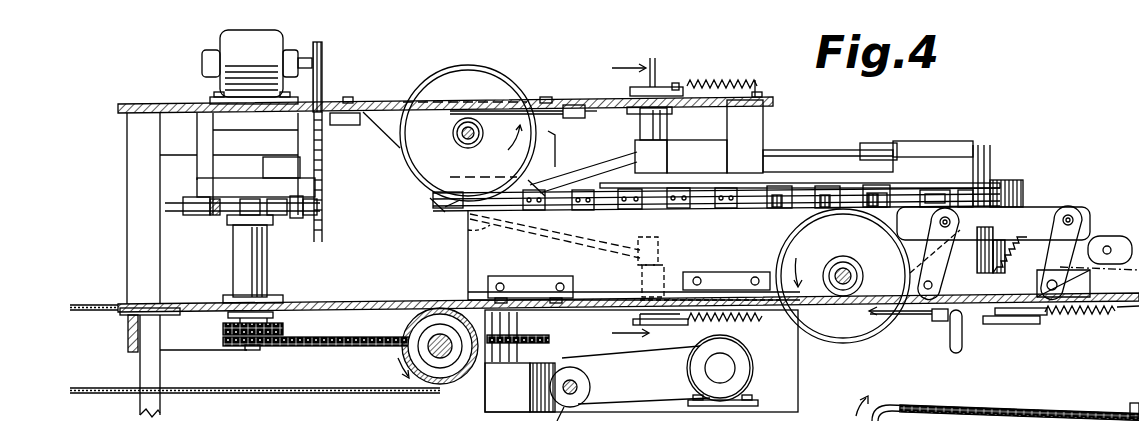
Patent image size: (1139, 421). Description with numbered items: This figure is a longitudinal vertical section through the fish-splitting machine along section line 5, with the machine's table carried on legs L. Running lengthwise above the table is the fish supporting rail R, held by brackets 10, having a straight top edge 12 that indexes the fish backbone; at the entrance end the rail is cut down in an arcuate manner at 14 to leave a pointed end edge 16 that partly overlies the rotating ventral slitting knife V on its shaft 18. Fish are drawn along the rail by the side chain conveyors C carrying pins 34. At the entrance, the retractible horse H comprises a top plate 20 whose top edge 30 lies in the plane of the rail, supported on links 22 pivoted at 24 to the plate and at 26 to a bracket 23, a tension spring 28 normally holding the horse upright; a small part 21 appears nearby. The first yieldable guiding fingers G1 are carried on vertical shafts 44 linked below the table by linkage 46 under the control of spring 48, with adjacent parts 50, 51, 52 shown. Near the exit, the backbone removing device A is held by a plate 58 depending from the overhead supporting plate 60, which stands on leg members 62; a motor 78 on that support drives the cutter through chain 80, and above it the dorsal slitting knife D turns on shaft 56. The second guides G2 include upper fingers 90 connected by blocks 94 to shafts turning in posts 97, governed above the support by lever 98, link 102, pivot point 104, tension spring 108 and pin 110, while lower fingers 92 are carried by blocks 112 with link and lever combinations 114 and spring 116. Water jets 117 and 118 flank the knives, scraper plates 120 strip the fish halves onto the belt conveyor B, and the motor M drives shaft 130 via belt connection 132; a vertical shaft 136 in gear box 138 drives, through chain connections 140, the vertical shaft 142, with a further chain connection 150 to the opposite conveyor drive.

The section line 5 is at (621, 202).
The brackets 10 is at (488, 287).
The top edge 12 is at (696, 226).
The arcuate cut 14 is at (774, 280).
The pointed end edge 16 is at (790, 240).
The shaft 18 is at (862, 242).
The top plate 20 is at (1050, 208).
The bracket 21 is at (905, 200).
The links 22 is at (962, 242).
The bracket 23 is at (973, 313).
The pivot 24 is at (940, 222).
The pivots 26 is at (1046, 286).
The tension spring 28 is at (1002, 244).
The top edge 30 is at (1070, 204).
The pins 34 is at (181, 202).
The vertical shafts 44 is at (1018, 324).
The linkage 46 is at (1052, 318).
The spring 48 is at (1110, 316).
The block 50 is at (930, 192).
The slide block 51 is at (1018, 190).
The block 52 is at (968, 196).
The shaft 56 is at (462, 134).
The plate 58 is at (435, 214).
The overhead supporting plate 60 is at (372, 110).
The leg members 62 is at (138, 150).
The motor 78 is at (238, 42).
The chain 80 is at (322, 86).
The upper fingers 90 is at (584, 165).
The lower guiding fingers 92 is at (474, 228).
The blocks 94 is at (658, 156).
The posts 97 is at (662, 136).
The lever 98 is at (652, 72).
The link 102 is at (636, 88).
The pivot point 104 is at (676, 83).
The tension spring 108 is at (722, 82).
The pin 110 is at (760, 88).
The blocks 112 is at (668, 282).
The link and lever combinations 114 is at (640, 318).
The spring 116 is at (750, 316).
The water jet 117 is at (910, 318).
The water jet 118 is at (515, 100).
The scraper plates 120 is at (282, 172).
The shaft 130 is at (584, 384).
The belt connection 132 is at (668, 394).
The vertical shaft 136 is at (520, 338).
The gear box 138 is at (495, 394).
The chain connections 140 is at (352, 348).
The vertical shaft 142 is at (250, 350).
The driving chain connection 150 is at (284, 334).
The backbone removing device A is at (440, 216).
The conveyor B is at (88, 304).
The side chain conveyors C is at (784, 184).
The dorsal slitting knife D is at (492, 95).
The yieldable guiding fingers G1 is at (988, 166).
The yieldable guides G2 is at (558, 160).
The retractible horse H is at (1078, 206).
The legs L is at (160, 412).
The motor M is at (740, 374).
The fish supporting rail R is at (486, 256).
The ventral slitting knife V is at (840, 344).